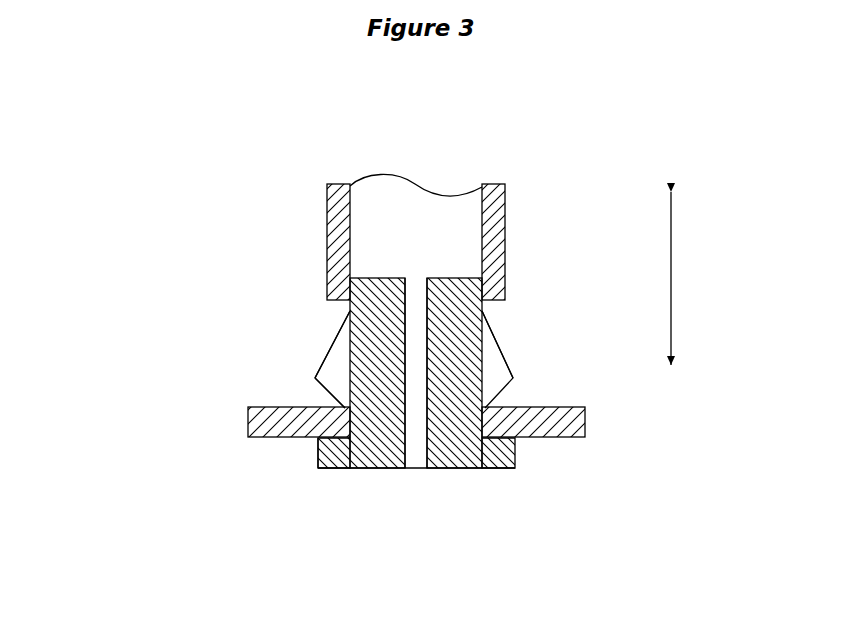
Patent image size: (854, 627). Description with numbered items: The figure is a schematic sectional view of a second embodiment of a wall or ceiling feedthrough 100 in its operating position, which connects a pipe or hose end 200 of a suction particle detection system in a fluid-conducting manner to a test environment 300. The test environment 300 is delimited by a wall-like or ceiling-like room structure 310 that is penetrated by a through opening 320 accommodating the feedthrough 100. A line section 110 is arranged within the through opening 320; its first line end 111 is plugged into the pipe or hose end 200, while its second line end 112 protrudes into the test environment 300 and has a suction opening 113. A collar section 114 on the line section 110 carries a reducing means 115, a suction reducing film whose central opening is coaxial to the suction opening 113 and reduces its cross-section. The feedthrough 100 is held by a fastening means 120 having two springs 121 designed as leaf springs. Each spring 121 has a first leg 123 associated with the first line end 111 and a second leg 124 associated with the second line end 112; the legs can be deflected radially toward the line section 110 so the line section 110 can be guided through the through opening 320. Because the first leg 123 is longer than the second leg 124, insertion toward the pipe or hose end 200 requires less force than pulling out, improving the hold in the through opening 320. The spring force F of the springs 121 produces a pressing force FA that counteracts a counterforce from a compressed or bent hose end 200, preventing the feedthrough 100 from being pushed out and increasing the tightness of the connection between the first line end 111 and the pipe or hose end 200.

The wall or ceiling feedthrough 100 is at (425, 347).
The line section 110 is at (408, 362).
The first line end 111 is at (461, 192).
The second line end 112 is at (443, 515).
The suction opening 113 is at (382, 419).
The collar section 114 is at (282, 482).
The reducing means 115 is at (373, 523).
The fastening means 120 is at (408, 334).
The spring 121 is at (586, 362).
The first leg 123 is at (301, 320).
The second leg 124 is at (315, 378).
The pipe or hose end 200 is at (400, 201).
The test environment 300 is at (444, 469).
The wall-like or ceiling-like room structure 310 is at (256, 467).
The through opening 320 is at (604, 464).
The pressing force FA is at (686, 278).
The spring force F is at (688, 321).